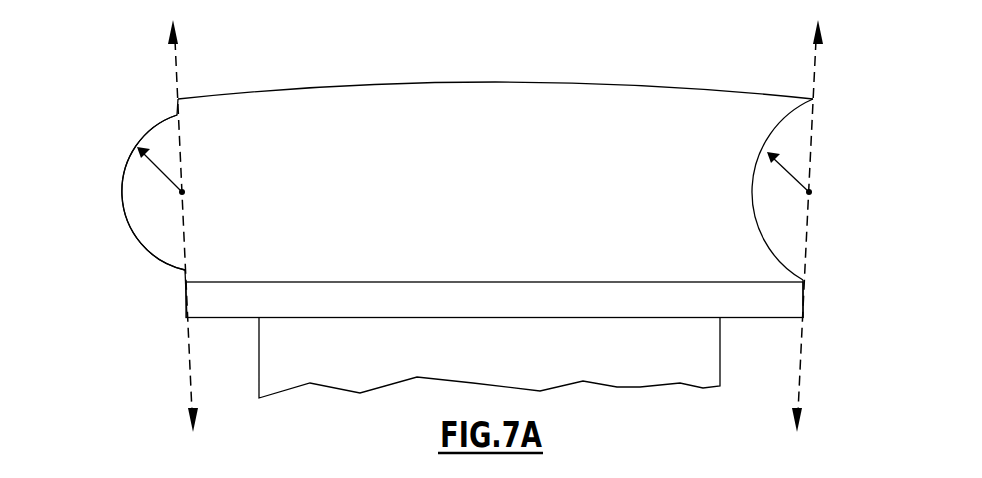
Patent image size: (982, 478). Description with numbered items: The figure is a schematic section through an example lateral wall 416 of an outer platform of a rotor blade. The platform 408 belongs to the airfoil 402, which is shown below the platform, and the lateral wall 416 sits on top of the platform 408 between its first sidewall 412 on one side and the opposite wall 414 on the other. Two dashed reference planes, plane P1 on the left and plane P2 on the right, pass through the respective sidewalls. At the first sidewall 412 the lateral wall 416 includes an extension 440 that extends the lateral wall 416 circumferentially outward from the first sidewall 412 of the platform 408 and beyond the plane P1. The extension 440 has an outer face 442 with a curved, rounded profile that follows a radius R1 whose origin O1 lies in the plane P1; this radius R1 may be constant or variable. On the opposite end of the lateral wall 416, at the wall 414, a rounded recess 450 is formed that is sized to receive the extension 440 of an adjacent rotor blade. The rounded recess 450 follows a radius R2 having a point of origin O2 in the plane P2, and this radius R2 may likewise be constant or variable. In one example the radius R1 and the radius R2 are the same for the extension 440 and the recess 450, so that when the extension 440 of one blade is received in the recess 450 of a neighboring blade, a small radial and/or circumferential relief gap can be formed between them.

The plane P1 is at (177, 74).
The plane P2 is at (816, 74).
The radius R1 is at (162, 170).
The radius R2 is at (787, 170).
The origin O1 is at (194, 189).
The point of origin O2 is at (823, 189).
The airfoil 402 is at (705, 355).
The platform 408 is at (723, 288).
The first sidewall 412 is at (187, 303).
The wall 414 is at (805, 300).
The lateral wall 416 is at (595, 102).
The extension 440 is at (148, 237).
The outer face 442 is at (114, 202).
The rounded recess 450 is at (782, 219).